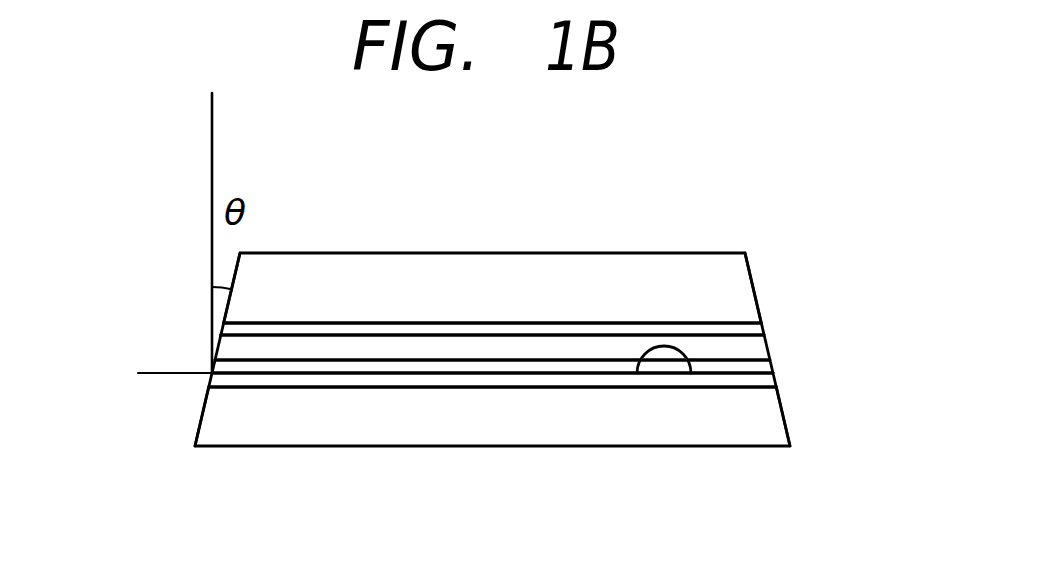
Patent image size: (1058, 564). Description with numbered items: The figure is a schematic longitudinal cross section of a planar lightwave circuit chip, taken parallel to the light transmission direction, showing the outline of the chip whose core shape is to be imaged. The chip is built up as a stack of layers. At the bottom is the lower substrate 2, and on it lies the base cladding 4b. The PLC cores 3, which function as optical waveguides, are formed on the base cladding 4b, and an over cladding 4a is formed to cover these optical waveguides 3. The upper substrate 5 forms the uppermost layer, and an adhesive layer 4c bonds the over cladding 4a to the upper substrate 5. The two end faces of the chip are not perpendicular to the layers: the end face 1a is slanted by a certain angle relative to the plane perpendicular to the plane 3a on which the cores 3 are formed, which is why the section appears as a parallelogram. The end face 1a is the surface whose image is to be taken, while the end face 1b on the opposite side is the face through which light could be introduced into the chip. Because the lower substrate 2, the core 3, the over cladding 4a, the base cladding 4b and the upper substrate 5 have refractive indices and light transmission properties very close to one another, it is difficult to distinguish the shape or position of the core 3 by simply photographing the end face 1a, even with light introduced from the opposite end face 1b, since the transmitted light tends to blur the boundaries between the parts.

The end face 1a is at (757, 292).
The end face 1b is at (203, 408).
The lower substrate 2 is at (260, 422).
The PLC core 3 is at (763, 368).
The plane on which the cores are formed 3a is at (691, 373).
The over cladding 4a is at (489, 345).
The base cladding 4b is at (520, 385).
The adhesive layer 4c is at (378, 330).
The upper substrate 5 is at (629, 283).